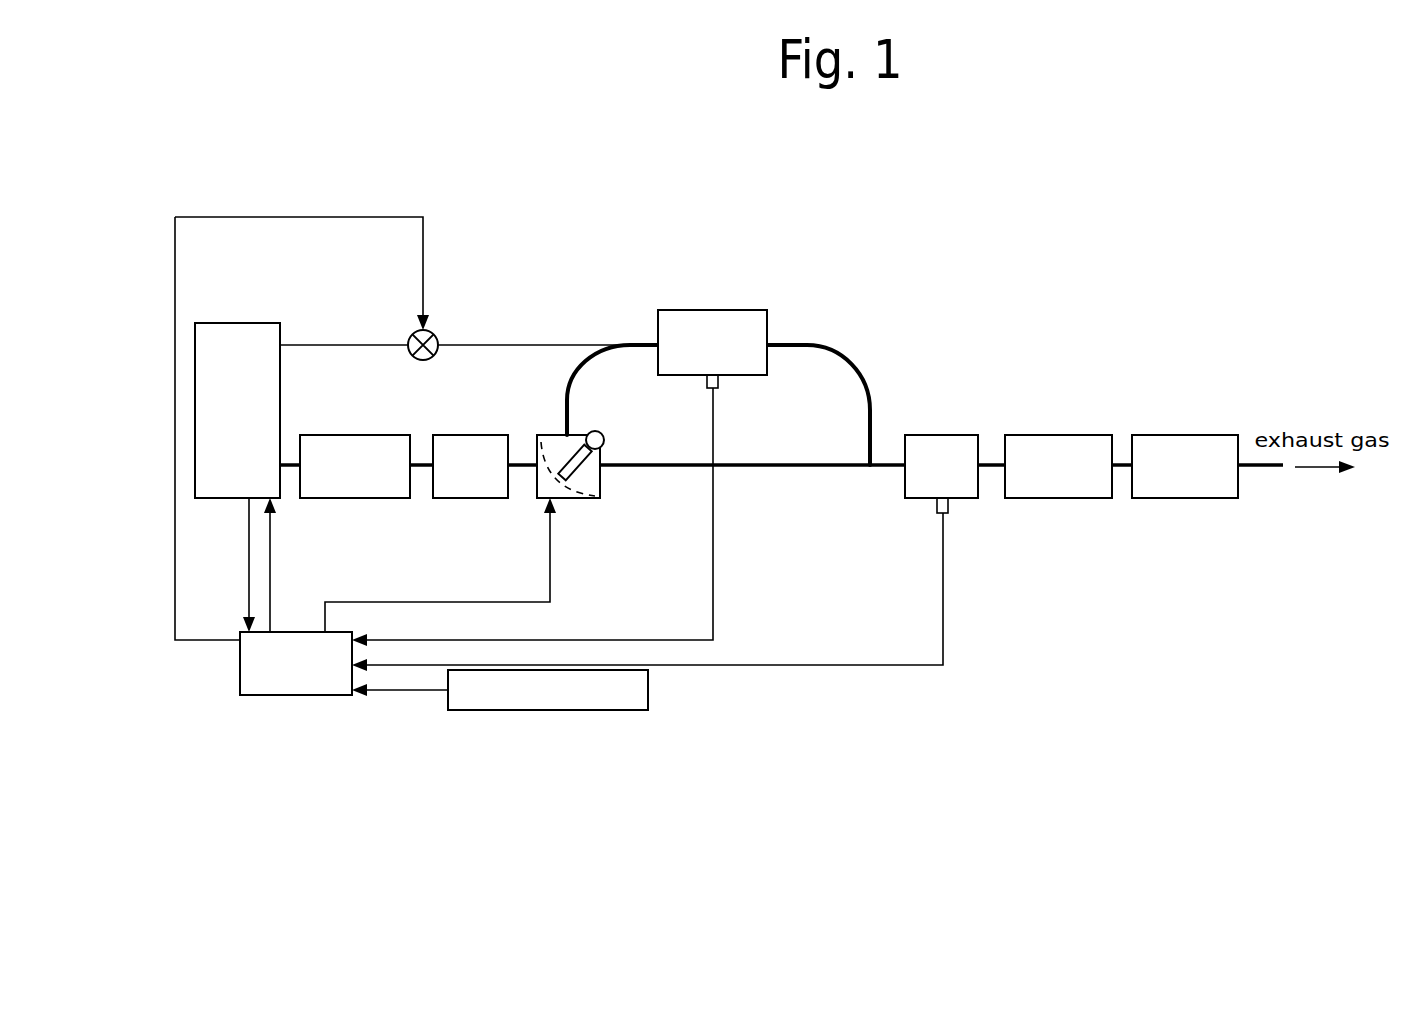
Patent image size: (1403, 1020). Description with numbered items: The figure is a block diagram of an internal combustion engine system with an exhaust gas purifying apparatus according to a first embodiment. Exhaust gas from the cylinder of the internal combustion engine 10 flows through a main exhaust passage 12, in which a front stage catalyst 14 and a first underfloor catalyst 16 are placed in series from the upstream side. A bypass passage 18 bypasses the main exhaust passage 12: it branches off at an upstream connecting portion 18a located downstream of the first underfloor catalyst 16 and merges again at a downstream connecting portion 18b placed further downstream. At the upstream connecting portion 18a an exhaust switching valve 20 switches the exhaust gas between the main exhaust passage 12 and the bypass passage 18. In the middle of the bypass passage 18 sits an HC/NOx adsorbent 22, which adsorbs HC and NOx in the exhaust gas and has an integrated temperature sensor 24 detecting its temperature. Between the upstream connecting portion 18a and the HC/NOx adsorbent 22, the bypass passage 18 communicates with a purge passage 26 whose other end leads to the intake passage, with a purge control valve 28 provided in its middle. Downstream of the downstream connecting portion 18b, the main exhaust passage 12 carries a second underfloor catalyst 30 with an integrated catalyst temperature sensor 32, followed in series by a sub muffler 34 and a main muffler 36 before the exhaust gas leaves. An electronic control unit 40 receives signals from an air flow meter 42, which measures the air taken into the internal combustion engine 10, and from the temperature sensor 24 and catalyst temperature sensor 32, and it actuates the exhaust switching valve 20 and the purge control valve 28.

The internal combustion engine 10 is at (257, 308).
The main exhaust passage 12 is at (290, 463).
The front stage catalyst 14 is at (363, 435).
The first underfloor catalyst 16 is at (468, 435).
The bypass passage 18 is at (851, 344).
The upstream connecting portion 18a is at (568, 434).
The downstream connecting portion 18b is at (855, 462).
The exhaust switching valve 20 is at (580, 485).
The HC/NOx adsorbent 22 is at (700, 310).
The temperature sensor 24 is at (720, 390).
The purge passage 26 is at (500, 345).
The purge control valve 28 is at (438, 335).
The second underfloor catalyst 30 is at (942, 435).
The catalyst temperature sensor 32 is at (950, 520).
The sub muffler 34 is at (1072, 435).
The main muffler 36 is at (1197, 435).
The electronic control unit 40 is at (282, 632).
The air flow meter 42 is at (652, 690).